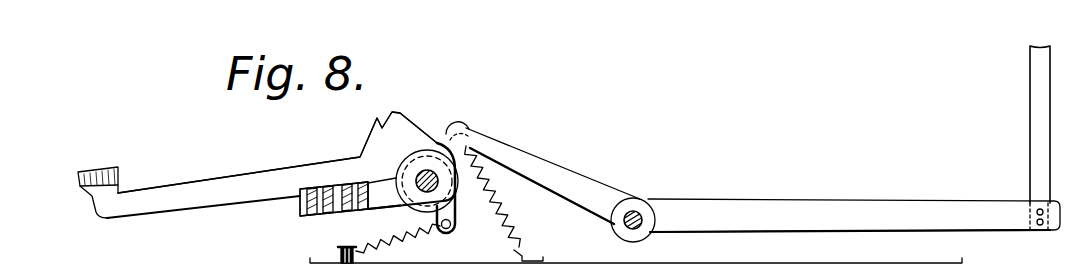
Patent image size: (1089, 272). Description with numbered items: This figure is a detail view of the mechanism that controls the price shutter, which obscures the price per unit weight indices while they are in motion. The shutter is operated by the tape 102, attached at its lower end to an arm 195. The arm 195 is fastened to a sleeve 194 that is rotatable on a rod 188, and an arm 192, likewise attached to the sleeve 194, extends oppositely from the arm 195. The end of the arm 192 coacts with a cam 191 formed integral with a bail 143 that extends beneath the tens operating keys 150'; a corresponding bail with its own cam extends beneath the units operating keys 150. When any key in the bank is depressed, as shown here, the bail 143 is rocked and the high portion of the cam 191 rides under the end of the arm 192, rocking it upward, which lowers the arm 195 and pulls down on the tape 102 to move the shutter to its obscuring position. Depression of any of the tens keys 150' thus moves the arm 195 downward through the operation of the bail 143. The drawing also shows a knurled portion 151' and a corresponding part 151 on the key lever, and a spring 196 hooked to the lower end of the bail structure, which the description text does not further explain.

The tens operating keys 150' is at (266, 172).
The units operating keys 150 is at (277, 152).
The knurled sleeve 151' is at (323, 213).
The knurled sleeve 151 is at (334, 199).
The bail 143 is at (374, 222).
The cam 191 is at (424, 150).
The arm 192 is at (542, 168).
The sleeve 194 is at (625, 208).
The rod 188 is at (640, 216).
The arm 195 is at (786, 202).
The tape 102 is at (1036, 134).
The spring 196 is at (412, 242).